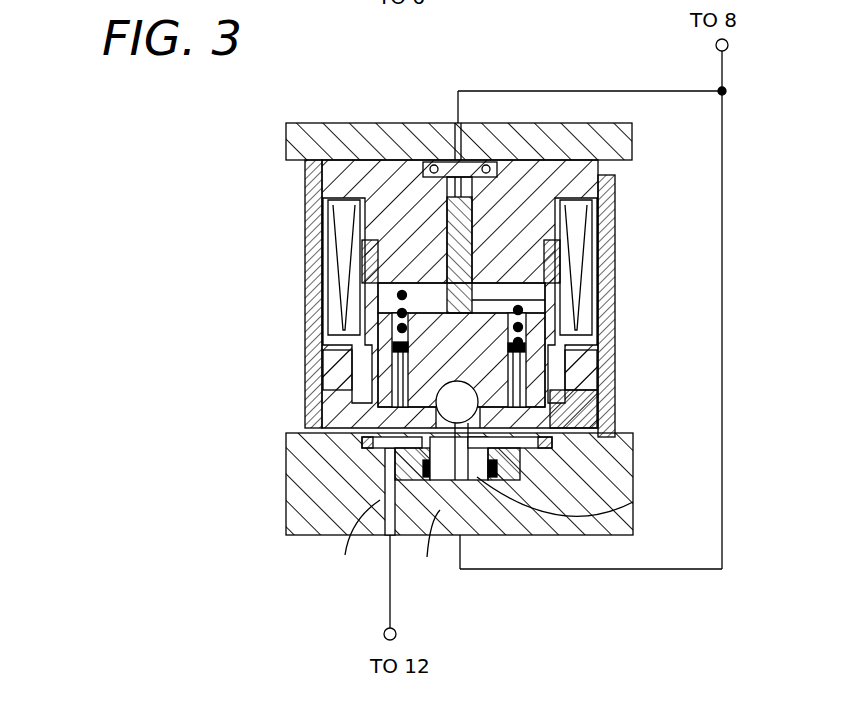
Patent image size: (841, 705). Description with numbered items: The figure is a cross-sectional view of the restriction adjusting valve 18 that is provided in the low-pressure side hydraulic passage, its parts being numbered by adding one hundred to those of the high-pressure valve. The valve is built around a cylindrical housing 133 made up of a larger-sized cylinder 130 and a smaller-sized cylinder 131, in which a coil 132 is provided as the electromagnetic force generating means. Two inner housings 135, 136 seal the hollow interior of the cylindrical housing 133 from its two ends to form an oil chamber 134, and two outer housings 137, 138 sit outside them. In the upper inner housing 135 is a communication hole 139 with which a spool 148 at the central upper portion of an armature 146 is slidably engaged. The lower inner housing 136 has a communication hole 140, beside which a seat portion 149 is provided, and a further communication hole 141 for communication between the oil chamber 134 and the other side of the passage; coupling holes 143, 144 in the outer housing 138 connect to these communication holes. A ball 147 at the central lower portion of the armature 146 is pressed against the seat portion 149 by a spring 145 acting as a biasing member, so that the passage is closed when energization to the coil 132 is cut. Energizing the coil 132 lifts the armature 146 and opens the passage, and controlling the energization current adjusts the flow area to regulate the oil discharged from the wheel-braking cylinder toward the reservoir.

The restriction adjusting valve 18 is at (215, 174).
The larger-sized cylinder 130 is at (592, 338).
The smaller-sized cylinder 131 is at (600, 350).
The coil 132 is at (604, 238).
The cylindrical housing 133 is at (300, 250).
The oil chamber 134 is at (305, 300).
The inner housing 135 is at (305, 167).
The inner housing 136 is at (305, 415).
The outer housing 137 is at (628, 140).
The outer housing 138 is at (325, 468).
The communication hole 139 is at (497, 175).
The communication hole 140 is at (633, 510).
The communication hole 141 is at (305, 350).
The coupling hole 143 is at (421, 549).
The coupling hole 144 is at (353, 544).
The spring 145 is at (548, 292).
The armature 146 is at (598, 395).
The ball 147 is at (474, 412).
The spool 148 is at (535, 300).
The seat portion 149 is at (560, 462).